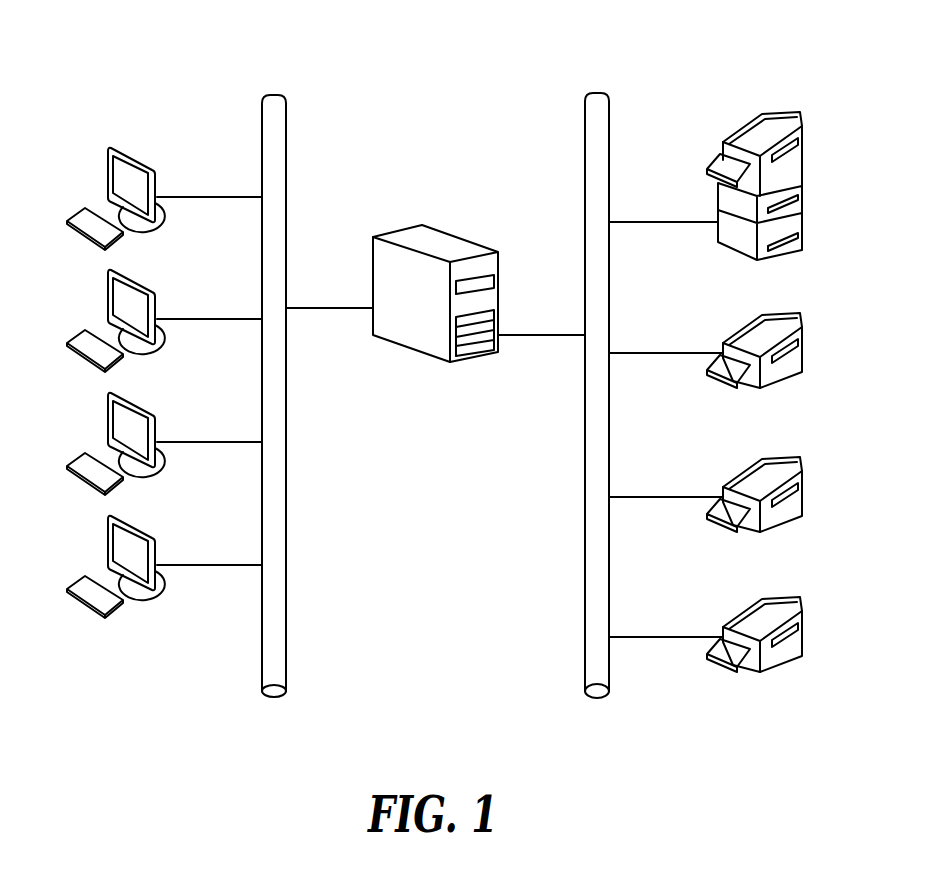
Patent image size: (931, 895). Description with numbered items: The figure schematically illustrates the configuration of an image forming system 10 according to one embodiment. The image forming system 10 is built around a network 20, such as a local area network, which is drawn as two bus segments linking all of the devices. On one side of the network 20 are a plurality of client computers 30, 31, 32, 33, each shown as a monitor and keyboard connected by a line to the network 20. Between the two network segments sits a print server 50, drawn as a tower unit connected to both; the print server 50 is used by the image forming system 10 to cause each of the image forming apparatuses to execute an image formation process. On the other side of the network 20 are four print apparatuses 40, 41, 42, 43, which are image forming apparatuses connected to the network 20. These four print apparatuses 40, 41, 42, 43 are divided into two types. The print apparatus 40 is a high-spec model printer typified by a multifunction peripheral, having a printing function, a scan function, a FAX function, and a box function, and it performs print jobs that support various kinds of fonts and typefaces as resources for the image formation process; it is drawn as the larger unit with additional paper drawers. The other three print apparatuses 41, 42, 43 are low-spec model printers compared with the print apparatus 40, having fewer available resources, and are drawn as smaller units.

The image forming system 10 is at (653, 70).
The network 20 is at (276, 94).
The client computer 30 is at (143, 159).
The client computer 31 is at (164, 307).
The client computer 32 is at (164, 430).
The client computer 33 is at (164, 553).
The print apparatus 40 is at (738, 127).
The print apparatus 41 is at (740, 323).
The print apparatus 42 is at (706, 482).
The print apparatus 43 is at (706, 622).
The print server 50 is at (415, 233).